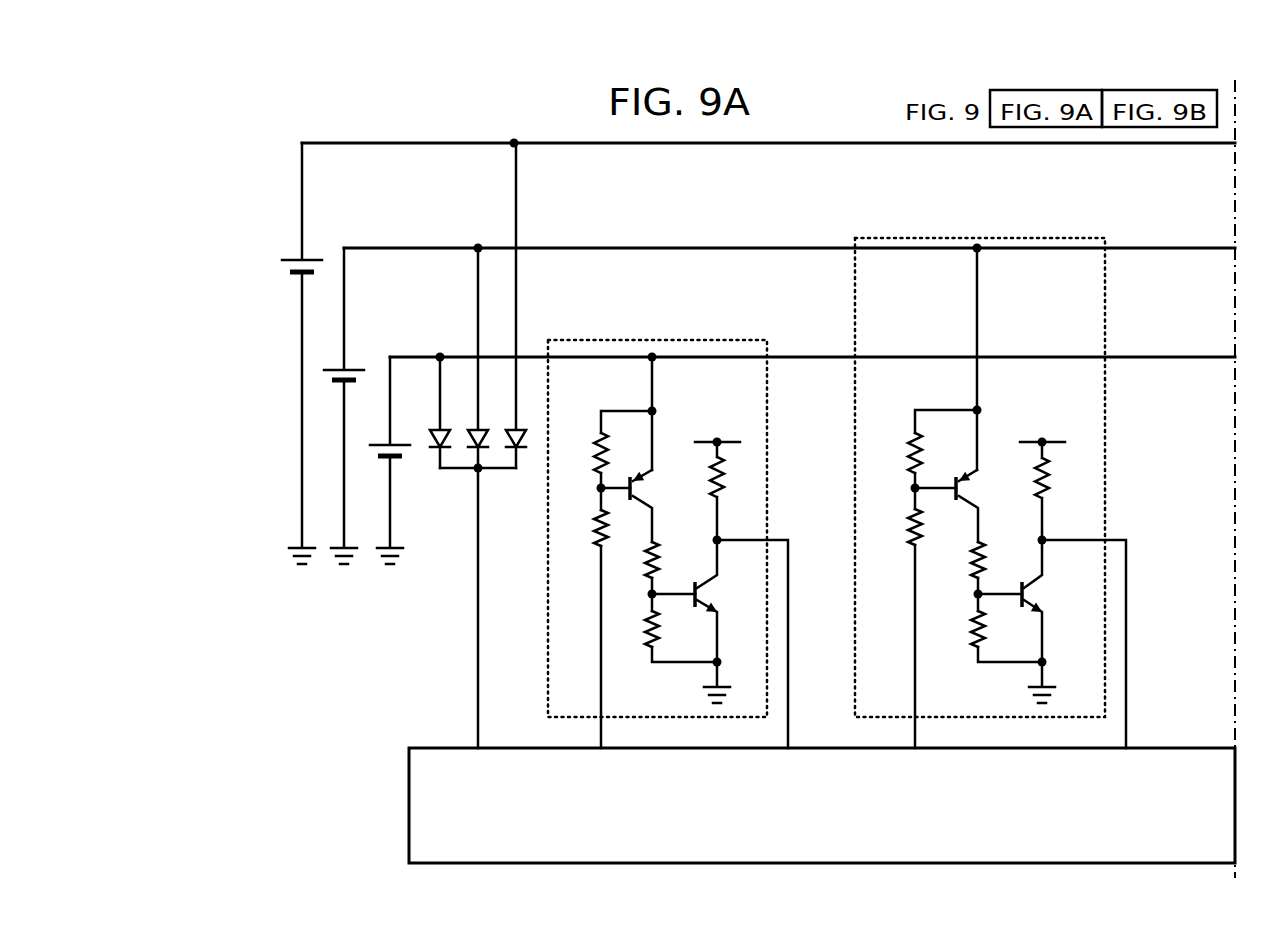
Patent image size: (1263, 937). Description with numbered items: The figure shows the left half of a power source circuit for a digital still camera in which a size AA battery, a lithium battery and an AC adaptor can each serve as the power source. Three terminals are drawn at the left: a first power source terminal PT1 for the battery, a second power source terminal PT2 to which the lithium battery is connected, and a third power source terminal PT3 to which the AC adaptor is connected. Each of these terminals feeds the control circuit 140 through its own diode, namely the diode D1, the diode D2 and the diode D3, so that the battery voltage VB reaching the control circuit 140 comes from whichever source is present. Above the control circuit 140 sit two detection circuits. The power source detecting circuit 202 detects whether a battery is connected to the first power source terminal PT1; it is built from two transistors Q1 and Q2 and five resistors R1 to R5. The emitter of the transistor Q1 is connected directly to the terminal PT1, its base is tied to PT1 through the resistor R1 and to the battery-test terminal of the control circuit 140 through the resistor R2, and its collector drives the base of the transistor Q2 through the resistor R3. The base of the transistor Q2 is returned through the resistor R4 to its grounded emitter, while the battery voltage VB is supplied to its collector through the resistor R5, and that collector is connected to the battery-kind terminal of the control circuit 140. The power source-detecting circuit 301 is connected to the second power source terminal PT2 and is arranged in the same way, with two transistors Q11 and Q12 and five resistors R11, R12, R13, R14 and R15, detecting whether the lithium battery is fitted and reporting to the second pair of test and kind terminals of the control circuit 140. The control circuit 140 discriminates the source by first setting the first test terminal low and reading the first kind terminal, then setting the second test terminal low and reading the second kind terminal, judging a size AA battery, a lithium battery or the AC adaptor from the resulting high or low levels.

The control circuit 140 is at (409, 810).
The power source detecting circuit 202 is at (667, 501).
The power source-detecting circuit 301 is at (990, 450).
The first power source terminal PT1 is at (376, 464).
The second power source terminal PT2 is at (331, 392).
The third power source terminal PT3 is at (281, 250).
The diode D1 is at (429, 412).
The diode D2 is at (466, 498).
The diode D3 is at (505, 305).
The resistor R1 is at (585, 453).
The resistor R2 is at (586, 528).
The resistor R3 is at (638, 560).
The resistor R4 is at (638, 629).
The resistor R5 is at (724, 477).
The transistor Q1 is at (640, 506).
The transistor Q2 is at (698, 601).
The resistor R11 is at (893, 453).
The resistor R12 is at (893, 527).
The resistor R13 is at (958, 560).
The resistor R14 is at (958, 629).
The resistor R15 is at (1056, 476).
The transistor Q11 is at (967, 506).
The transistor Q12 is at (1030, 601).